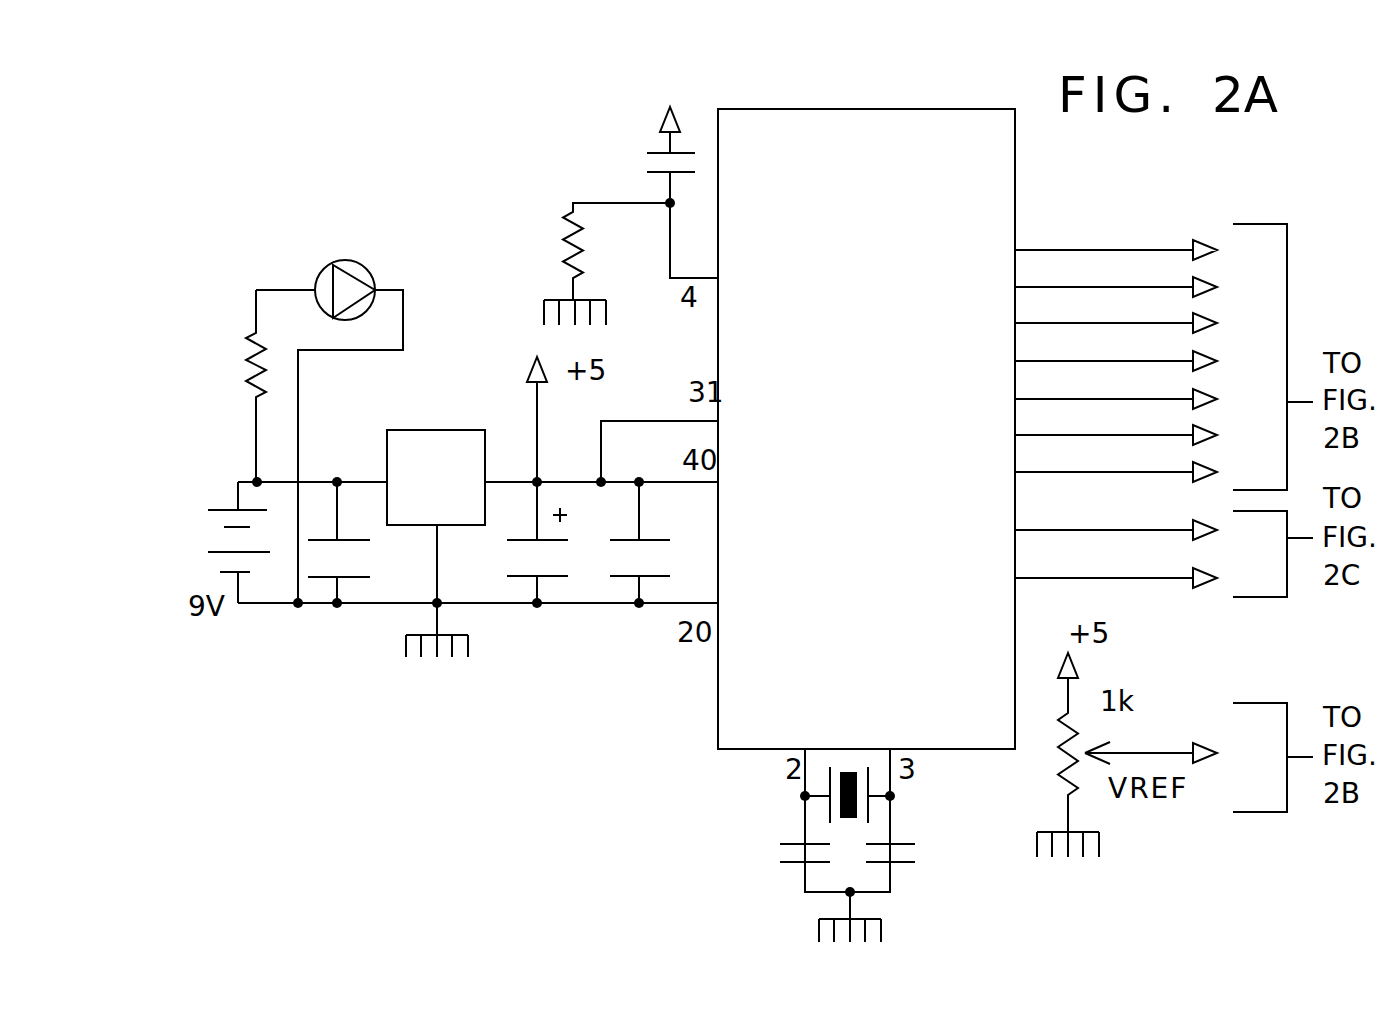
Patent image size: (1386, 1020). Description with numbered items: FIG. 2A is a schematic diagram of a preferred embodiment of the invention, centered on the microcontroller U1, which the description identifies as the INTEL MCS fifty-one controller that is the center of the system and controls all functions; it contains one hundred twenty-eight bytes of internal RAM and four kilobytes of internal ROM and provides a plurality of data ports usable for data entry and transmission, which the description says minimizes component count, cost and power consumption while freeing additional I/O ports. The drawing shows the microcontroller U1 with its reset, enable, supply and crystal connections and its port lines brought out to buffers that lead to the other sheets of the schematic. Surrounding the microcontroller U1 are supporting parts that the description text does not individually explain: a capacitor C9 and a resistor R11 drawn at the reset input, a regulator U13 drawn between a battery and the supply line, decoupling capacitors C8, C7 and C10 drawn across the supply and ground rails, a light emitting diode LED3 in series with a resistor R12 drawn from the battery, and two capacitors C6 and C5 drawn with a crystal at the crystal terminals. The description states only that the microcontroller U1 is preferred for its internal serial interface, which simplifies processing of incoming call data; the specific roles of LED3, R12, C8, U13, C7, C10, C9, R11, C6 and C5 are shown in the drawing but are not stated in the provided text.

The light emitting diode LED3 is at (329, 414).
The 2K resistor R12 is at (222, 386).
The .1uF capacitor C8 is at (335, 588).
The 7805 voltage regulator U13 is at (430, 543).
The .1uF capacitor C7 is at (535, 585).
The .1uF capacitor C10 is at (631, 585).
The 10uF reset capacitor C9 is at (674, 192).
The 10k reset resistor R11 is at (581, 264).
The microcontroller U1 is at (990, 439).
The 30pf crystal load capacitor C6 is at (772, 860).
The 30pf crystal load capacitor C5 is at (927, 863).